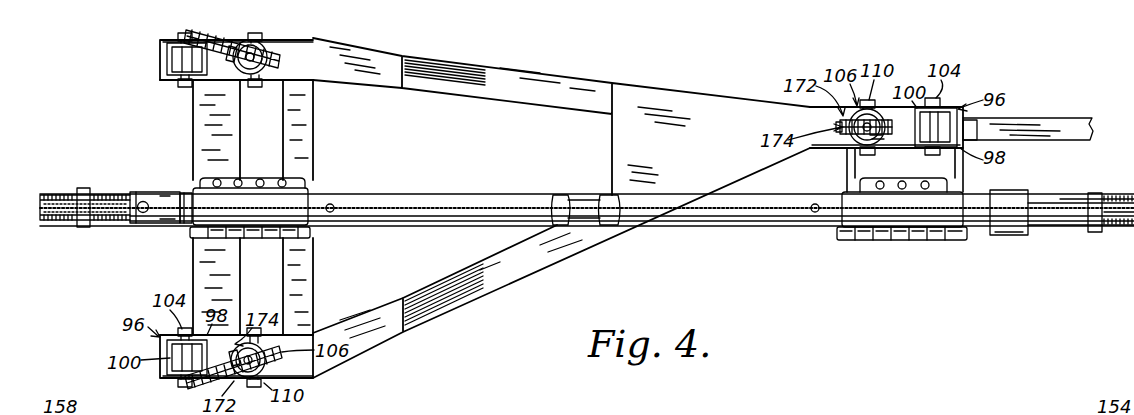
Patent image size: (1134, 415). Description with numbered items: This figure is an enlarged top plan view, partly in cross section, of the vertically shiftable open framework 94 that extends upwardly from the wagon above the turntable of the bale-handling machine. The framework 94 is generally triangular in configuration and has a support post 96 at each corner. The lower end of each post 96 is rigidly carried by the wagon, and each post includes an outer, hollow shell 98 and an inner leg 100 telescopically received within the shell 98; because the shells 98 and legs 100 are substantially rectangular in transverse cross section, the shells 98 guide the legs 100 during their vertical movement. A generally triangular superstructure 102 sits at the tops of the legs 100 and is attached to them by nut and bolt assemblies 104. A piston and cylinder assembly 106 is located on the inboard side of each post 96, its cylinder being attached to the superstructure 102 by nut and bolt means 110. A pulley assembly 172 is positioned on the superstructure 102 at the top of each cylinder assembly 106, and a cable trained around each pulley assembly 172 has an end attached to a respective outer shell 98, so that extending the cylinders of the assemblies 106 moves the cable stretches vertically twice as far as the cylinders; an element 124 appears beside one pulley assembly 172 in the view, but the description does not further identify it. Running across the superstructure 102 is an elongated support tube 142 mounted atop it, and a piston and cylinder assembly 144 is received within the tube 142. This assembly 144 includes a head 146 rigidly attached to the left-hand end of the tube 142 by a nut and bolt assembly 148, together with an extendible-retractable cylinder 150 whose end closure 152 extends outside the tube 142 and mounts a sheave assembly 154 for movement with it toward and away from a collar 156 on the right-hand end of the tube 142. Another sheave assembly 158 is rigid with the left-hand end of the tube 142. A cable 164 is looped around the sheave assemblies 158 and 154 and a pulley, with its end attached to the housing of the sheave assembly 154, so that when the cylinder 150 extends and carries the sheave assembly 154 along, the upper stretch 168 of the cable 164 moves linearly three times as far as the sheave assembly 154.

The open framework 94 is at (420, 280).
The support post 96 is at (150, 82).
The outer hollow shell 98 is at (176, 39).
The inner leg 100 is at (170, 52).
The superstructure 102 is at (487, 280).
The nut and bolt assemblies 104 is at (180, 86).
The piston and cylinder assembly 106 is at (284, 66).
The nut and bolt means 110 is at (256, 34).
The end post 124 is at (233, 68).
The support tube 142 is at (365, 193).
The piston and cylinder assembly 144 is at (186, 186).
The head 146 is at (157, 196).
The nut and bolt assembly 148 is at (141, 213).
The extendible-retractable cylinder 150 is at (562, 196).
The end closure 152 is at (1036, 228).
The sheave assembly 154 is at (1120, 244).
The collar 156 is at (1006, 236).
The sheave assembly 158 is at (53, 188).
The cable 164 is at (696, 230).
The upper stretch 168 is at (770, 222).
The pulley assembly 172 is at (240, 40).